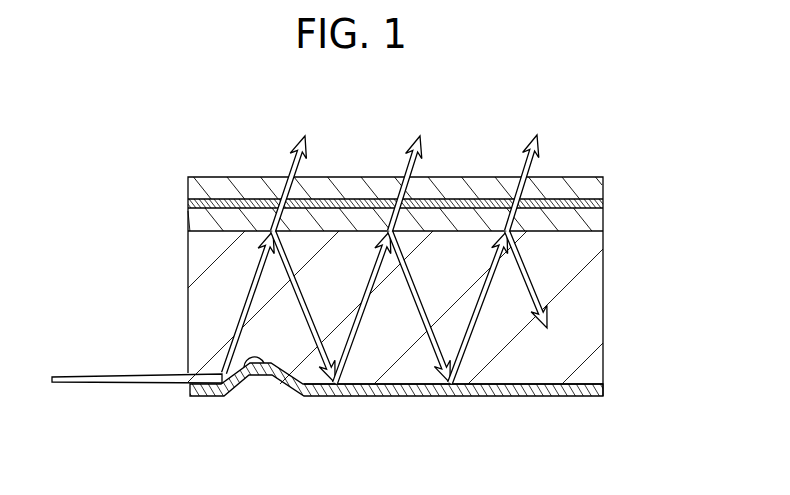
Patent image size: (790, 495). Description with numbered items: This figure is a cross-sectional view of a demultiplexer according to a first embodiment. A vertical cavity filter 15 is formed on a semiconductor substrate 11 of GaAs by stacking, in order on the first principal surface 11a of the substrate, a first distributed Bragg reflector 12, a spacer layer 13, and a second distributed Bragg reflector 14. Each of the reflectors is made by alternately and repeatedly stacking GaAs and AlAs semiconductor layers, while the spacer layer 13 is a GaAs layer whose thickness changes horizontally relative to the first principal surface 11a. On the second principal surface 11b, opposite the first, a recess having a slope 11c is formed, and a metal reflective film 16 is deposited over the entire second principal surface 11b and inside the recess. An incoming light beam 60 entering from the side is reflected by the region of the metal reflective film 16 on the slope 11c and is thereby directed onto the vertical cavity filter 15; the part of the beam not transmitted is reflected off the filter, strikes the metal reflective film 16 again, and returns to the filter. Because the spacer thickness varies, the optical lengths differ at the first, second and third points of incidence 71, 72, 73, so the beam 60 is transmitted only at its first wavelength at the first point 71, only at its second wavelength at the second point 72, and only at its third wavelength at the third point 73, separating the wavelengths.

The semiconductor substrate 11 is at (603, 313).
The first principal surface 11a is at (553, 231).
The second principal surface 11b is at (553, 397).
The slope 11c is at (260, 373).
The first distributed Bragg reflector 12 is at (603, 225).
The spacer layer 13 is at (603, 203).
The second distributed Bragg reflector 14 is at (603, 186).
The vertical cavity filter 15 is at (684, 162).
The metal reflective film 16 is at (372, 397).
The incoming light beam 60 is at (118, 373).
The first point of incidence 71 is at (265, 204).
The second point of incidence 72 is at (383, 204).
The third point of incidence 73 is at (500, 203).